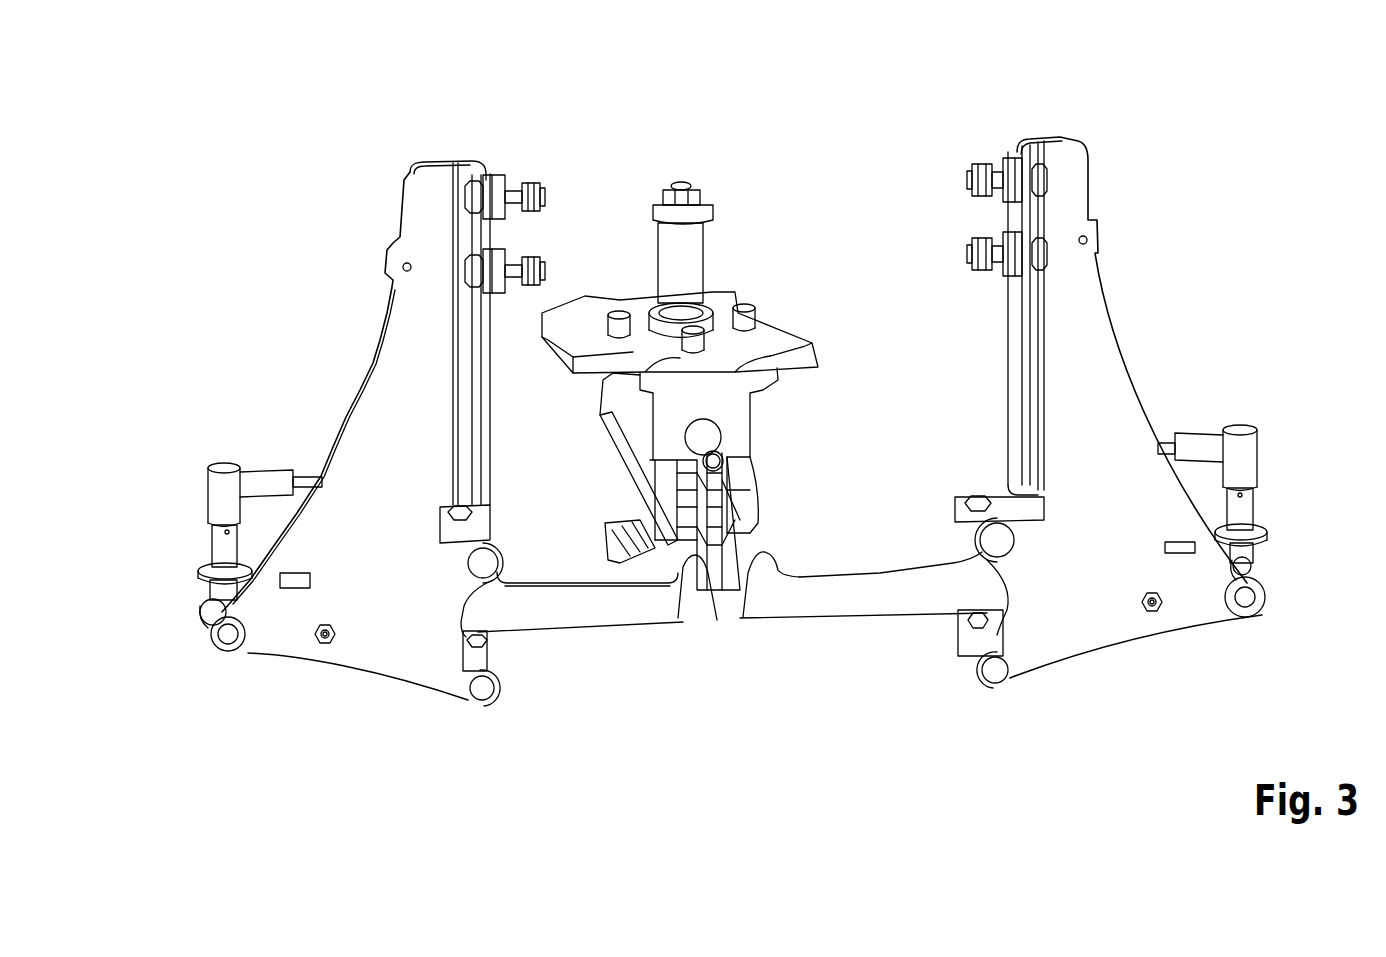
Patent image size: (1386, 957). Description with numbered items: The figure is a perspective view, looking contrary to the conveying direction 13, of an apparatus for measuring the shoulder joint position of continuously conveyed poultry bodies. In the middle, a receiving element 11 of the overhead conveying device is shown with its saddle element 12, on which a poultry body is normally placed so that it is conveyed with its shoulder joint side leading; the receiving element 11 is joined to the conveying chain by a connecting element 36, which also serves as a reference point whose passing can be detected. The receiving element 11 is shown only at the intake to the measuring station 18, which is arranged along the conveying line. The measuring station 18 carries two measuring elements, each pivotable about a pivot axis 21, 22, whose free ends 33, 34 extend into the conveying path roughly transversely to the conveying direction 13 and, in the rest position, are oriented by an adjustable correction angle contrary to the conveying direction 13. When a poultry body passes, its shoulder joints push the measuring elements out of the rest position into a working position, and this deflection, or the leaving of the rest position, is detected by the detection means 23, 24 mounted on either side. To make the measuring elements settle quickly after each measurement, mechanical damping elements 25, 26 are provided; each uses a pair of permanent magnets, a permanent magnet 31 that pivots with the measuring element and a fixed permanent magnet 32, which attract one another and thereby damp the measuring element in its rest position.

The receiving element 11 is at (792, 287).
The saddle element 12 is at (617, 462).
The conveying direction 13 is at (203, 90).
The measuring station 18 is at (1136, 273).
The pivot axis 21 is at (879, 602).
The pivot axis 22 is at (577, 617).
The detection means 23 is at (223, 483).
The detection means 24 is at (1245, 446).
The damping element 25 is at (1283, 545).
The damping element 26 is at (185, 592).
The permanent magnet 31 is at (208, 608).
The permanent magnet 32 is at (228, 637).
The free end 33 is at (763, 590).
The free end 34 is at (687, 593).
The connecting element 36 is at (694, 260).